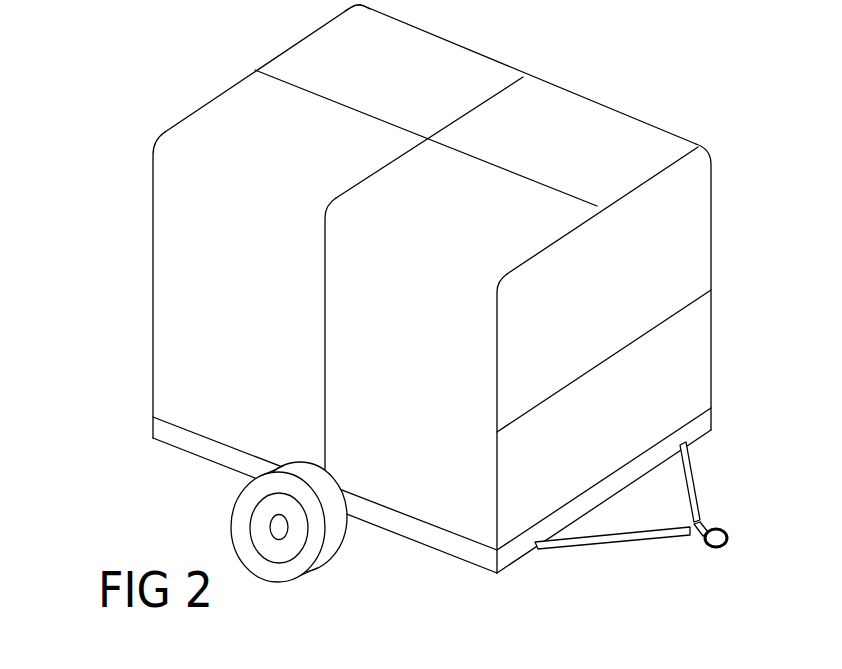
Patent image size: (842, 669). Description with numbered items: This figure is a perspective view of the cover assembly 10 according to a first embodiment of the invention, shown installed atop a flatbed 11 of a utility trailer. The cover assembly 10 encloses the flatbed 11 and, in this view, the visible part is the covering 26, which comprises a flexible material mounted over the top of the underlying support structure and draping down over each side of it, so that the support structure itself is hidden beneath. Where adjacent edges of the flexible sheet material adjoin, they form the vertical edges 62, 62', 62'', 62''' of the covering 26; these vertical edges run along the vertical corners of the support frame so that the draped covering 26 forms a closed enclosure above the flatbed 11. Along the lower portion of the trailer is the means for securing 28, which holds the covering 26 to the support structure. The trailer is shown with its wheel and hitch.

The cover assembly 10 is at (86, 231).
The flatbed 11 is at (218, 465).
The covering 26 is at (627, 138).
The means for securing 28 is at (711, 418).
The vertical edge 62 is at (736, 287).
The vertical edge 62' is at (469, 423).
The vertical edge 62'' is at (124, 285).
The vertical edge 62''' is at (396, 12).